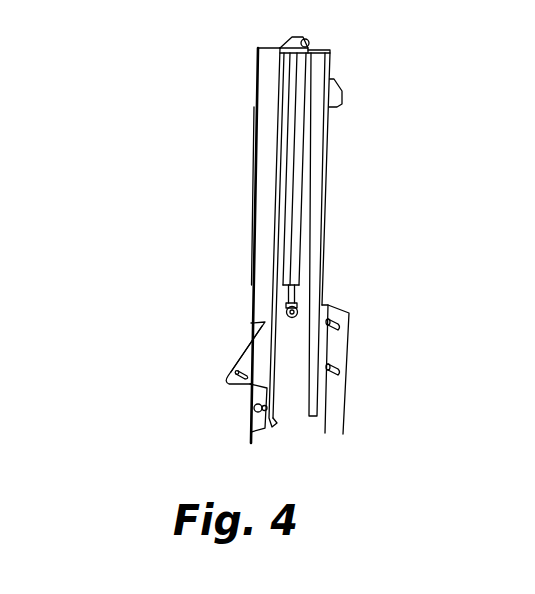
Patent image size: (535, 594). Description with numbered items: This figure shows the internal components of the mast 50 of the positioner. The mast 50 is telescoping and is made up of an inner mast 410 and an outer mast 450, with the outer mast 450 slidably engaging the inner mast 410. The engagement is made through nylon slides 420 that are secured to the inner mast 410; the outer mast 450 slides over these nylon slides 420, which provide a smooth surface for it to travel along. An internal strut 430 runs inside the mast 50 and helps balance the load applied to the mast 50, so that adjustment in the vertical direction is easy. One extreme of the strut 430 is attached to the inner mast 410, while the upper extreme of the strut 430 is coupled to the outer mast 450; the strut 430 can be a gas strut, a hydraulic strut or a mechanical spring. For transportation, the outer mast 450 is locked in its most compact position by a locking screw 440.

The mast 50 is at (95, 121).
The inner mast 410 is at (260, 84).
The nylon slides 420 is at (280, 193).
The internal strut 430 is at (300, 90).
The locking screw 440 is at (254, 408).
The outer mast 450 is at (343, 405).